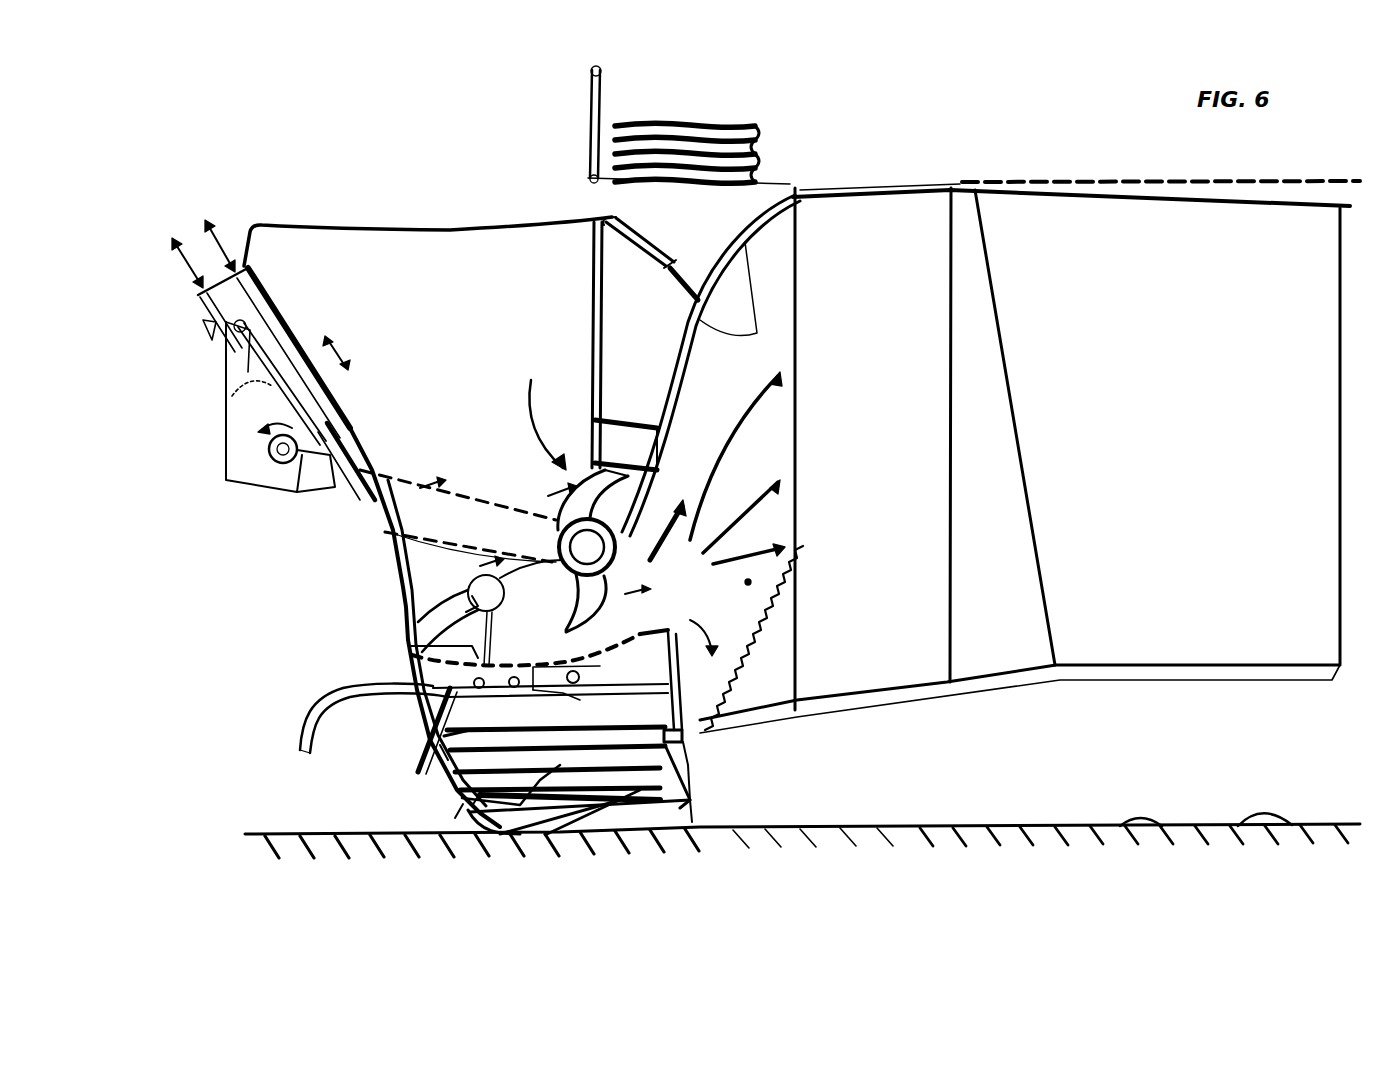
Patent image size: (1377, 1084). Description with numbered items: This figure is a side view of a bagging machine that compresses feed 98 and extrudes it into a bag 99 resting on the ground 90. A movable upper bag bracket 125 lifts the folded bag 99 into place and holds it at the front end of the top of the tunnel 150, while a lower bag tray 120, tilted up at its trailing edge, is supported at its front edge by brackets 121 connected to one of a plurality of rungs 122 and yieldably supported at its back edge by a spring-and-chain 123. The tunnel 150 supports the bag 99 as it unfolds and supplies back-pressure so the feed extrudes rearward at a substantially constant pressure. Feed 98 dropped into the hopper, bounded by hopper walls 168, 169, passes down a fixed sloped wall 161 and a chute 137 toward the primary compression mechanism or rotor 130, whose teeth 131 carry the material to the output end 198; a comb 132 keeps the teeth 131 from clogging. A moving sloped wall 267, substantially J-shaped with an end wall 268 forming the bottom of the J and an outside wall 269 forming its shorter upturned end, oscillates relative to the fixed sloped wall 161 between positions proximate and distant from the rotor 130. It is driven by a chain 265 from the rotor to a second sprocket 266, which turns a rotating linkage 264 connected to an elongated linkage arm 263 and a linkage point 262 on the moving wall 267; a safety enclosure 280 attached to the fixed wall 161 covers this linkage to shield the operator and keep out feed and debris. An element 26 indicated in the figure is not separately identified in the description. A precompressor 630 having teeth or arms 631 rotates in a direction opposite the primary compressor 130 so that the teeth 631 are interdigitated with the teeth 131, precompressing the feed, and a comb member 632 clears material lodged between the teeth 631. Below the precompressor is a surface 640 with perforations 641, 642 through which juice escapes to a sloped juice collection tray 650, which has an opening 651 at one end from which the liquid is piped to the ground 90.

The support assembly 26 is at (310, 509).
The ground 90 is at (338, 843).
The feed 98 is at (484, 229).
The folded bag 99 is at (718, 124).
The lower bag tray 120 is at (506, 836).
The brackets 121 is at (477, 767).
The rungs 122 is at (474, 812).
The spring-and-chain 123 is at (738, 662).
The movable upper bag bracket 125 is at (578, 118).
The primary compression mechanism 130 is at (640, 505).
The teeth 131 is at (624, 658).
The comb 132 is at (662, 495).
The chute 137 is at (539, 410).
The tunnel 150 is at (1217, 645).
The fixed sloped wall 161 is at (344, 418).
The hopper wall 168 is at (566, 240).
The hopper wall 169 is at (603, 318).
The output end 198 is at (666, 487).
The linkage point 262 is at (228, 344).
The elongated linkage arm 263 is at (244, 397).
The rotating linkage 264 is at (302, 494).
The chain 265 is at (478, 512).
The second sprocket 266 is at (268, 452).
The moving sloped wall 267 is at (272, 294).
The end wall 268 is at (216, 285).
The outside wall 269 is at (205, 317).
The safety enclosure 280 is at (226, 468).
The precompressor 630 is at (470, 592).
The teeth 631 is at (426, 620).
The comb member 632 is at (410, 650).
The surface 640 is at (433, 683).
The perforation 641 is at (596, 672).
The perforation 642 is at (570, 700).
The juice collection tray 650 is at (425, 750).
The opening 651 is at (298, 714).